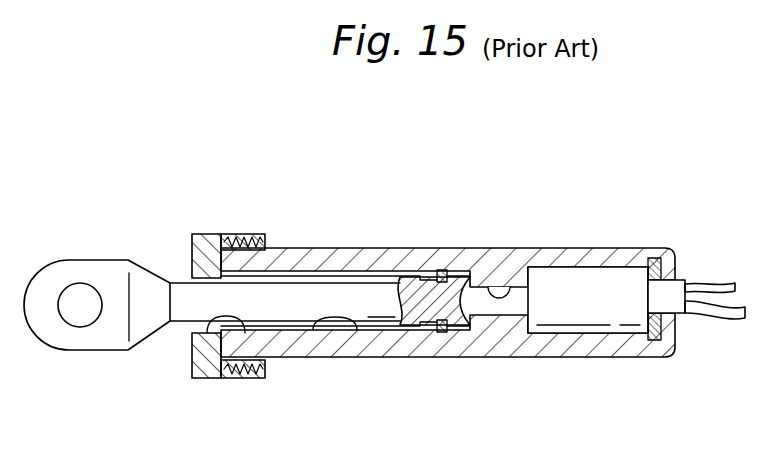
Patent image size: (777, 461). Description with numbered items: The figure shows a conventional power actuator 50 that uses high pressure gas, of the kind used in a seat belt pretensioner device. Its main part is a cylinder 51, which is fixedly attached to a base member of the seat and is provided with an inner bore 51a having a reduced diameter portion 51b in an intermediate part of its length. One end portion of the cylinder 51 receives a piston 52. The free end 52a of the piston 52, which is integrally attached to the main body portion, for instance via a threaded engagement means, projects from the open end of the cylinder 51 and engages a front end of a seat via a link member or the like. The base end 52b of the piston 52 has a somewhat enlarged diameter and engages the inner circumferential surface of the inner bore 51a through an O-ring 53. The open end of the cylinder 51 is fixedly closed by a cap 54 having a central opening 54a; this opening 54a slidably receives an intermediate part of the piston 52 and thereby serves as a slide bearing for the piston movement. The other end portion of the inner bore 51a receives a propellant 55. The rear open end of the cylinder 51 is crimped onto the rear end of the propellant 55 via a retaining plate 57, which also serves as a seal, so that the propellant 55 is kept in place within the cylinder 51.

The power actuator 50 is at (433, 160).
The cylinder 51 is at (309, 263).
The inner bore 51a is at (343, 321).
The reduced diameter portion 51b is at (511, 286).
The piston 52 is at (362, 277).
The free end of the piston 52a is at (83, 272).
The base end of the piston 52b is at (434, 342).
The O-ring 53 is at (446, 270).
The cap 54 is at (210, 257).
The central opening 54a is at (233, 345).
The propellant 55 is at (580, 290).
The retaining plate 57 is at (653, 258).